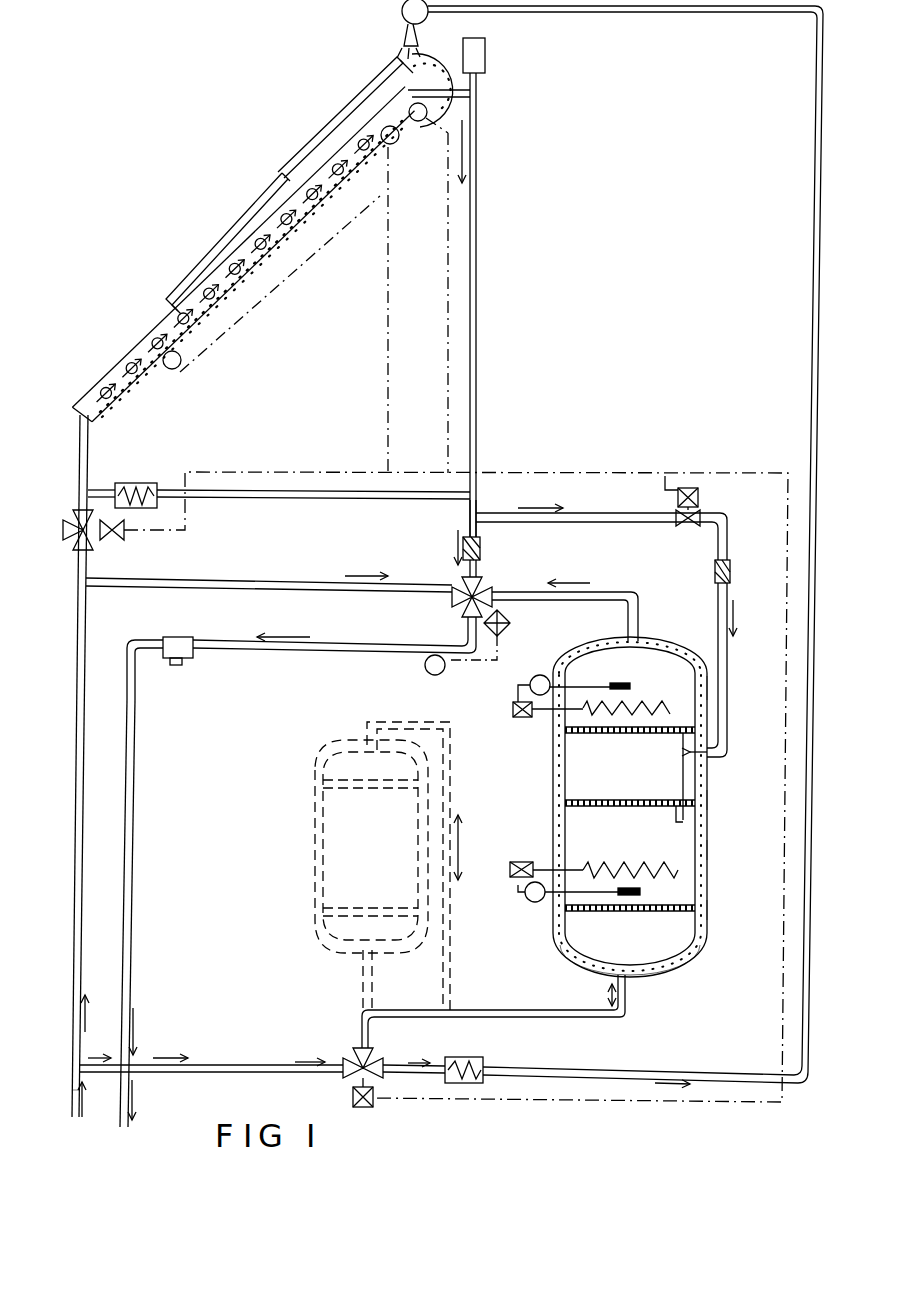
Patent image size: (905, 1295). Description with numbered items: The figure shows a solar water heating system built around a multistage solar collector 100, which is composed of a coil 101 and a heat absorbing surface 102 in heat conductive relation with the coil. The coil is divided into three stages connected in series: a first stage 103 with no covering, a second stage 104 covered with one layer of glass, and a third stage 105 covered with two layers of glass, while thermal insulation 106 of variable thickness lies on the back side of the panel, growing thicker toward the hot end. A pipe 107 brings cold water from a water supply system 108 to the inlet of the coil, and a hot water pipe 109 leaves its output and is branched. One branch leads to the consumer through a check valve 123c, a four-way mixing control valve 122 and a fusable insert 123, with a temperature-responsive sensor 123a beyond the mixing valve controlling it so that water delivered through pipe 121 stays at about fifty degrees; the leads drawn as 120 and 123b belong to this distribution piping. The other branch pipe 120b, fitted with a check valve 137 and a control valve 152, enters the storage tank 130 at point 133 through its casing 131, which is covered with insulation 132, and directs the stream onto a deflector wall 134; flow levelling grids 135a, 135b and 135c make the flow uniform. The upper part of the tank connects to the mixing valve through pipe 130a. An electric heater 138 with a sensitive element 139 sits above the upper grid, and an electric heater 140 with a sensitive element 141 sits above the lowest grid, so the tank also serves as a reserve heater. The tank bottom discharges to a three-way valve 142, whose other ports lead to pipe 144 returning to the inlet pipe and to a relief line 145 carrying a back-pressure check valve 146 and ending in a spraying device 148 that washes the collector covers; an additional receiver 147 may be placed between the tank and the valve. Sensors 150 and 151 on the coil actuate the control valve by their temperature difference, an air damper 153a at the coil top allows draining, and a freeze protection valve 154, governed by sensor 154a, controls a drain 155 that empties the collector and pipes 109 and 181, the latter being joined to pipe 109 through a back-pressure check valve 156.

The multistage solar collector 100 is at (236, 190).
The coil 101 is at (108, 392).
The heat absorbing surface 102 is at (116, 390).
The first stage 103 is at (142, 355).
The second stage 104 is at (204, 288).
The third stage 105 is at (338, 115).
The thermal insulation 106 is at (277, 252).
The pipe 107 is at (76, 893).
The water supply system 108 is at (70, 1097).
The pipe 109 is at (479, 280).
The conduit 120 is at (463, 518).
The branch pipe 120b is at (640, 513).
The pipe 121 is at (132, 1128).
The four-way mixing control valve 122 is at (458, 602).
The fusable insert 123 is at (188, 636).
The temperature-responsive sensor 123a is at (424, 666).
The conduit 123b is at (283, 578).
The check valve 123c is at (482, 555).
The storage tank 130 is at (675, 628).
The pipe 130a is at (647, 580).
The casing 131 is at (683, 962).
The insulation 132 is at (707, 800).
The connection point 133 is at (690, 740).
The deflector wall 134 is at (685, 778).
The flow levelling grid 135a is at (710, 686).
The flow levelling grid 135b is at (703, 845).
The flow levelling grid 135c is at (705, 897).
The check valve 137 is at (760, 552).
The electric heater 138 is at (583, 717).
The sensitive element 139 is at (540, 675).
The electric heater 140 is at (587, 866).
The sensitive element 141 is at (600, 910).
The three-way valve 142 is at (347, 1088).
The pipe 144 is at (250, 1052).
The relief line 145 is at (613, 1062).
The back-pressure check valve 146 is at (485, 1068).
The additional receiver 147 is at (312, 858).
The spraying device 148 is at (402, 38).
The sensor 150 is at (416, 122).
The sensor 151 is at (176, 370).
The control valve 152 is at (700, 497).
The air damper 153a is at (488, 60).
The freeze protection valve 154 is at (74, 525).
The sensor 154a is at (384, 144).
The drain 155 is at (63, 530).
The back-pressure check valve 156 is at (155, 483).
The pipe 181 is at (345, 503).